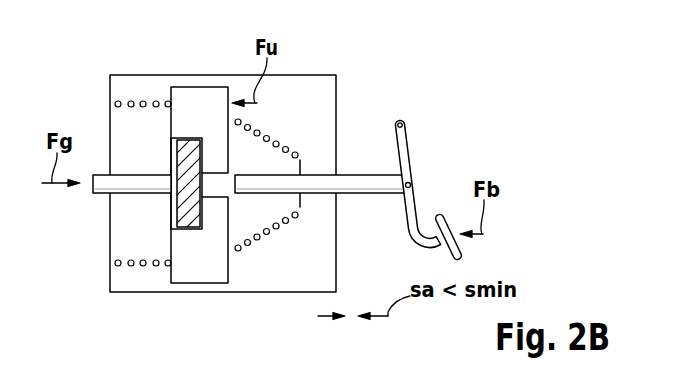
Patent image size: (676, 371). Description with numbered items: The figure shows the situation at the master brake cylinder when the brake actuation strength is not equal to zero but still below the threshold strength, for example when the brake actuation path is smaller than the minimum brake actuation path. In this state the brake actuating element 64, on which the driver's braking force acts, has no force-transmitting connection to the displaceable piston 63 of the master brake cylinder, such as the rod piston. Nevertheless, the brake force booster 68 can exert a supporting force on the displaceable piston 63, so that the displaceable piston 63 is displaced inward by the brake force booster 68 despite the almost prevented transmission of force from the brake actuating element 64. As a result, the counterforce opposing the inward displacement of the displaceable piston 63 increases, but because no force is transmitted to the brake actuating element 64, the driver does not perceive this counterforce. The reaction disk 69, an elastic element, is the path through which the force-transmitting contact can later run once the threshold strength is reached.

The displaceable piston 63 is at (107, 187).
The brake actuating element 64 is at (402, 148).
The brake force booster 68 is at (198, 93).
The reaction disk 69 is at (188, 217).